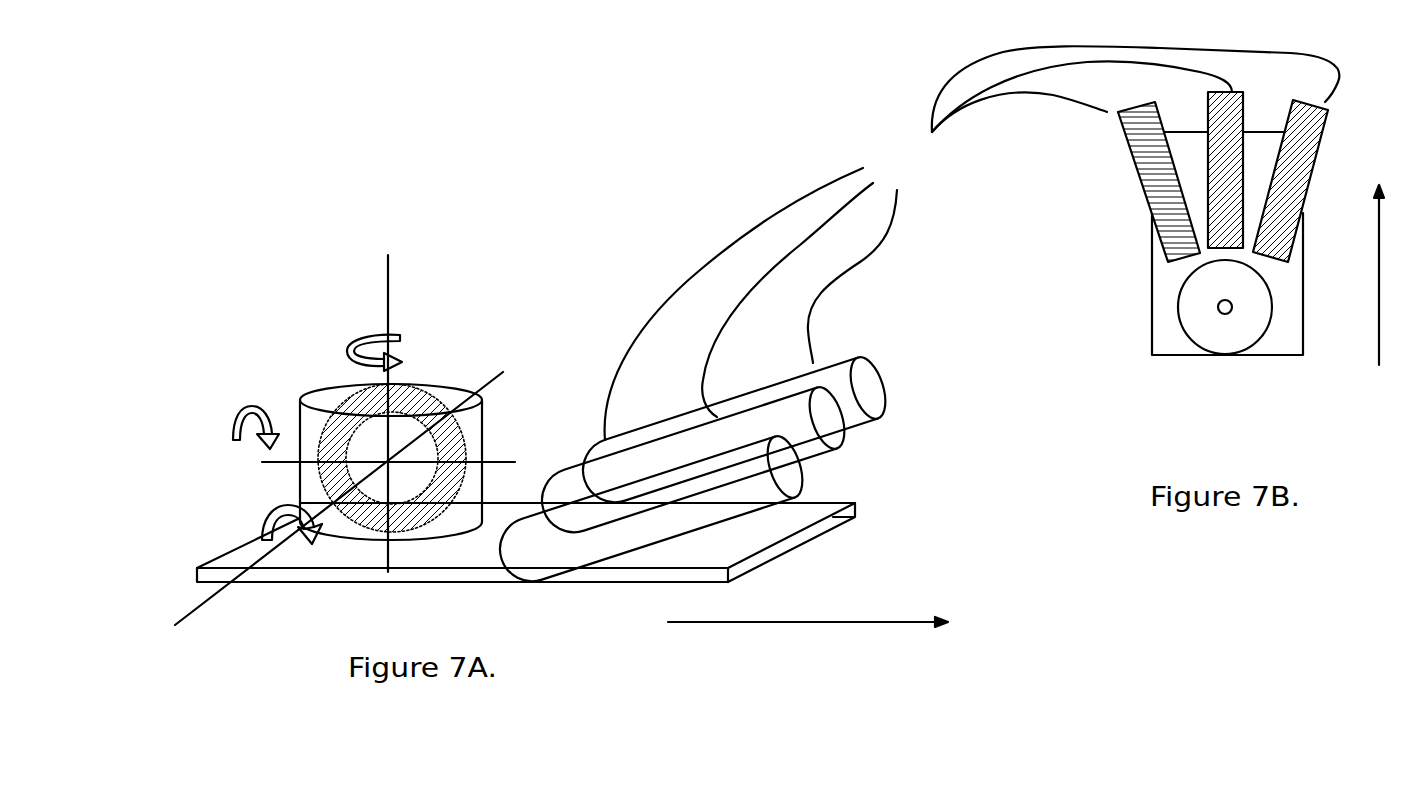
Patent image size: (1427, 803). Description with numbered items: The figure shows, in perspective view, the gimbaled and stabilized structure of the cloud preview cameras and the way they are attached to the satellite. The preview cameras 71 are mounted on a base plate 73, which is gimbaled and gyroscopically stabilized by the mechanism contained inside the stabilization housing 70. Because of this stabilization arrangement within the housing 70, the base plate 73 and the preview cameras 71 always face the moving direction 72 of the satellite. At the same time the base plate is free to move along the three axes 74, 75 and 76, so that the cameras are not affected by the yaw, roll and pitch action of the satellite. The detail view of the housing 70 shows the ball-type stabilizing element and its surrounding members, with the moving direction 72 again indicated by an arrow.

In FIG. 7A, the stabilization mechanism 70 is at (455, 387).
In FIG. 7B, the stabilization mechanism 70 is at (1178, 304).
In FIG. 7A, the preview cameras 71 is at (698, 372).
In FIG. 7A, the moving direction 72 is at (782, 621).
In FIG. 7B, the moving direction 72 is at (1372, 300).
In FIG. 7A, the base plate 73 is at (855, 503).
In FIG. 7A, the axis 74 is at (374, 392).
In FIG. 7A, the axis 75 is at (339, 526).
In FIG. 7A, the axis 76 is at (355, 443).